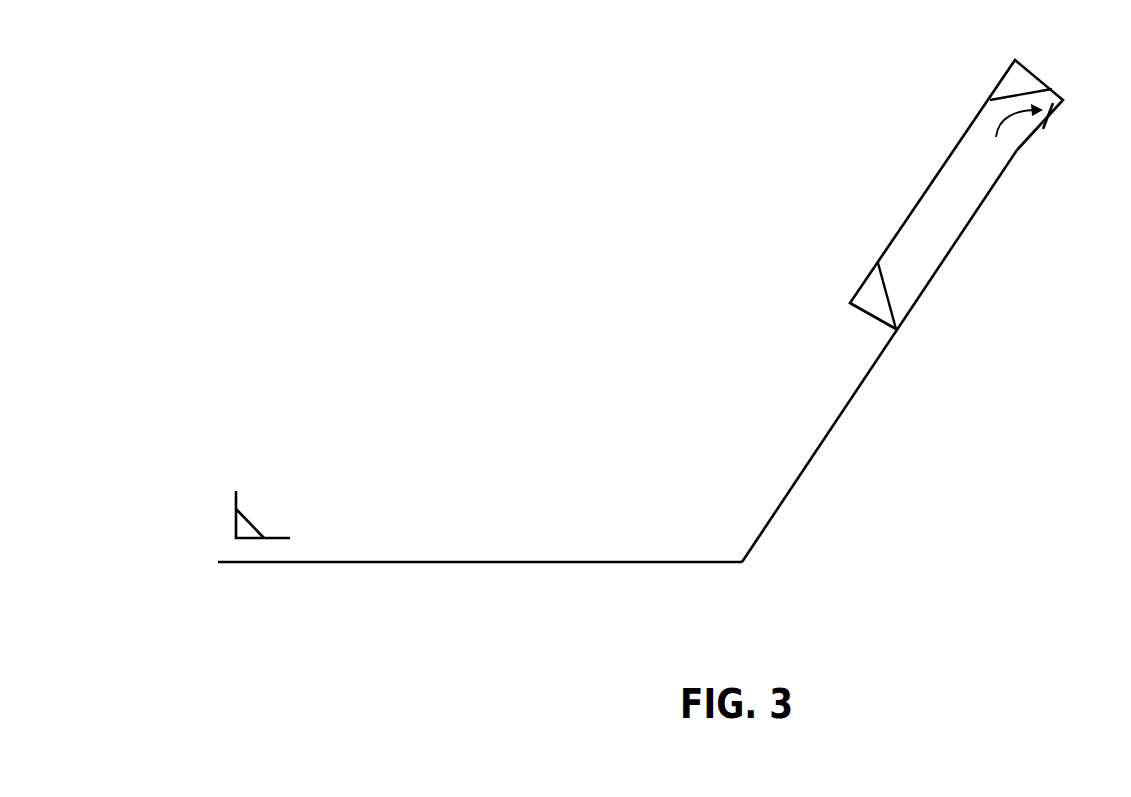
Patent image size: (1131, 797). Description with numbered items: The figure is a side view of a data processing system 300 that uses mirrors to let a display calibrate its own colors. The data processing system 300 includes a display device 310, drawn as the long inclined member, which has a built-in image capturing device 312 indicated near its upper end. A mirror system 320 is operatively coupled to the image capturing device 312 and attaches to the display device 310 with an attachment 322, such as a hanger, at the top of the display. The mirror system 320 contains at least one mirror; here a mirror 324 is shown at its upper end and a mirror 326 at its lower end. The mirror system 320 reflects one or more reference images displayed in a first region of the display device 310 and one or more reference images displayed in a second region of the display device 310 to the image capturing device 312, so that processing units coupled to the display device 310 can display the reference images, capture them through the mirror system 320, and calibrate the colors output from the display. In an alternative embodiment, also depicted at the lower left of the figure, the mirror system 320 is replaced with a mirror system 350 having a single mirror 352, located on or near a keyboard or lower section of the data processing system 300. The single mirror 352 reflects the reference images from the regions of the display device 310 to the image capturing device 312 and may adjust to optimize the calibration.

The data processing system 300 is at (606, 588).
The display device 310 is at (928, 284).
The image capturing device 312 is at (1008, 136).
The mirror system 320 is at (927, 183).
The attachment 322 is at (1066, 103).
The mirror 324 is at (994, 111).
The mirror 326 is at (886, 282).
The mirror system 350 is at (235, 500).
The single mirror 352 is at (252, 523).